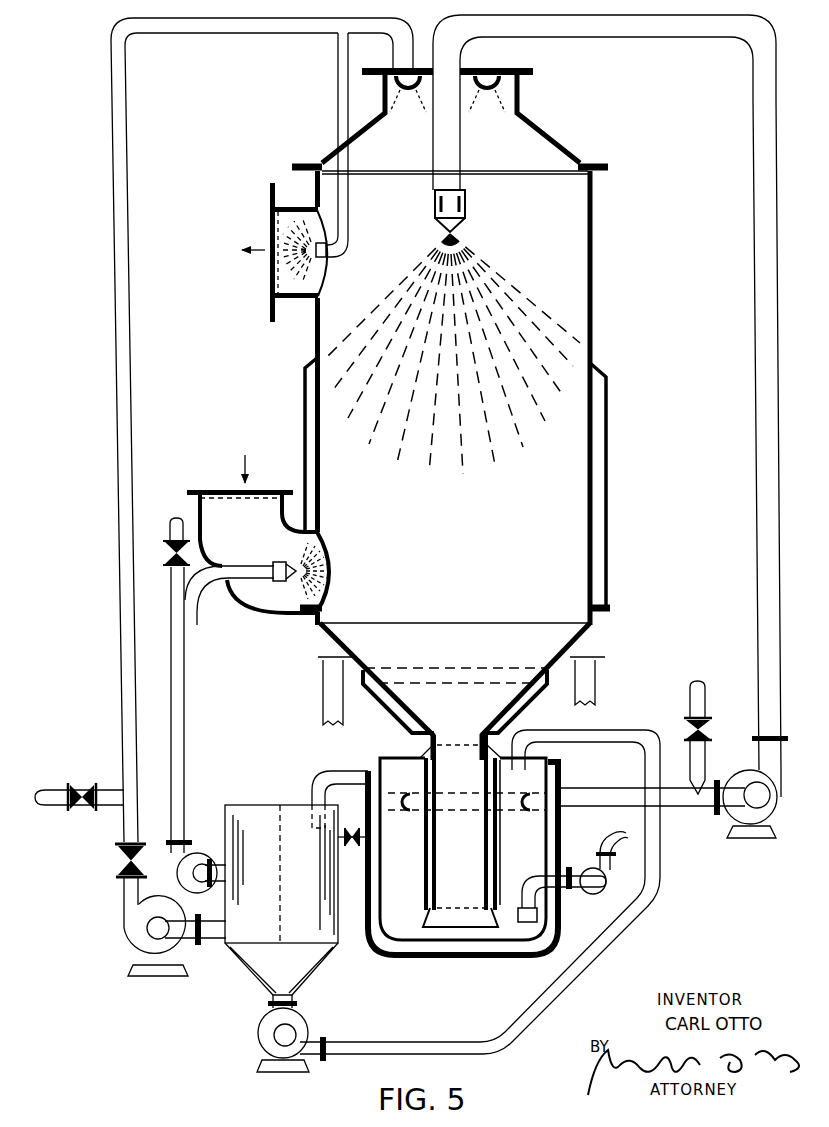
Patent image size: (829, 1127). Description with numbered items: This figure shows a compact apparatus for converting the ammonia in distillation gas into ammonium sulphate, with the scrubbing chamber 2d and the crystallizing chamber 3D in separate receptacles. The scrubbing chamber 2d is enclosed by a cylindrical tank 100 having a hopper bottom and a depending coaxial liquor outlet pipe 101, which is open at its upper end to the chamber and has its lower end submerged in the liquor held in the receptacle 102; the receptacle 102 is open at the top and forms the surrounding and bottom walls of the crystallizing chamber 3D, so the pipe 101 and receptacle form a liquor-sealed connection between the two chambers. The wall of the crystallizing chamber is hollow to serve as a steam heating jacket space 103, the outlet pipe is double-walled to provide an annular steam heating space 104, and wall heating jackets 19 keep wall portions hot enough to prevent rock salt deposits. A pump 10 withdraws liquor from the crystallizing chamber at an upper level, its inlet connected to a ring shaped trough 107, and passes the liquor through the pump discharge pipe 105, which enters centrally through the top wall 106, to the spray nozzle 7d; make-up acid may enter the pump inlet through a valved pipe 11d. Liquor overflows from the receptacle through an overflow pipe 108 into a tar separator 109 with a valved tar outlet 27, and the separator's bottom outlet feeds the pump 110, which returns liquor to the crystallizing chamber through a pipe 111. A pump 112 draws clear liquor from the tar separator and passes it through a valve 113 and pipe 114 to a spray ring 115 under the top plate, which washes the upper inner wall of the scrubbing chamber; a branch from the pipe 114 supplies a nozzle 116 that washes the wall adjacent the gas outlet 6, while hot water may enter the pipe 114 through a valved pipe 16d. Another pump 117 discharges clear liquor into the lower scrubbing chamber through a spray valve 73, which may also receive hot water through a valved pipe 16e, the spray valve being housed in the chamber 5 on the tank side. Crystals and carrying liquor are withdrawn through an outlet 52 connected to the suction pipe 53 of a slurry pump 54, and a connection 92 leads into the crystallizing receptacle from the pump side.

The cylindrical tank 100 is at (594, 342).
The scrubbing chamber 2d is at (455, 397).
The wall heating jacket 19 is at (600, 478).
The pipe 114 is at (132, 208).
The top wall 106 is at (622, 42).
The pump discharge pipe 105 is at (754, 578).
The spray ring 115 is at (401, 98).
The spray nozzle 7d is at (469, 199).
The gas outlet 6 is at (306, 302).
The nozzle 116 is at (327, 272).
The spray chamber 5 is at (258, 534).
The spray valve 73 is at (275, 585).
The valved pipe 16e is at (178, 498).
The valved pipe 16d is at (50, 789).
The valve 113 is at (119, 857).
The pump 112 is at (130, 948).
The pump 117 is at (205, 853).
The tar separator 109 is at (281, 906).
The overflow pipe 108 is at (334, 772).
The valved tar outlet 27 is at (349, 846).
The steam heating jacket space 103 is at (429, 961).
The receptacle 102 is at (458, 938).
The liquor outlet pipe 101 is at (439, 771).
The crystallizing chamber 3D is at (465, 849).
The ring shaped trough 107 is at (396, 812).
The annular steam heating space 104 is at (496, 858).
The inlet conduit 92 is at (561, 779).
The outlet 52 is at (538, 915).
The suction pipe 53 is at (579, 866).
The slurry pump 54 is at (614, 882).
The pipe 111 is at (602, 968).
The pump 110 is at (258, 1021).
The pump 10 is at (752, 819).
The valved pipe 11d is at (708, 697).